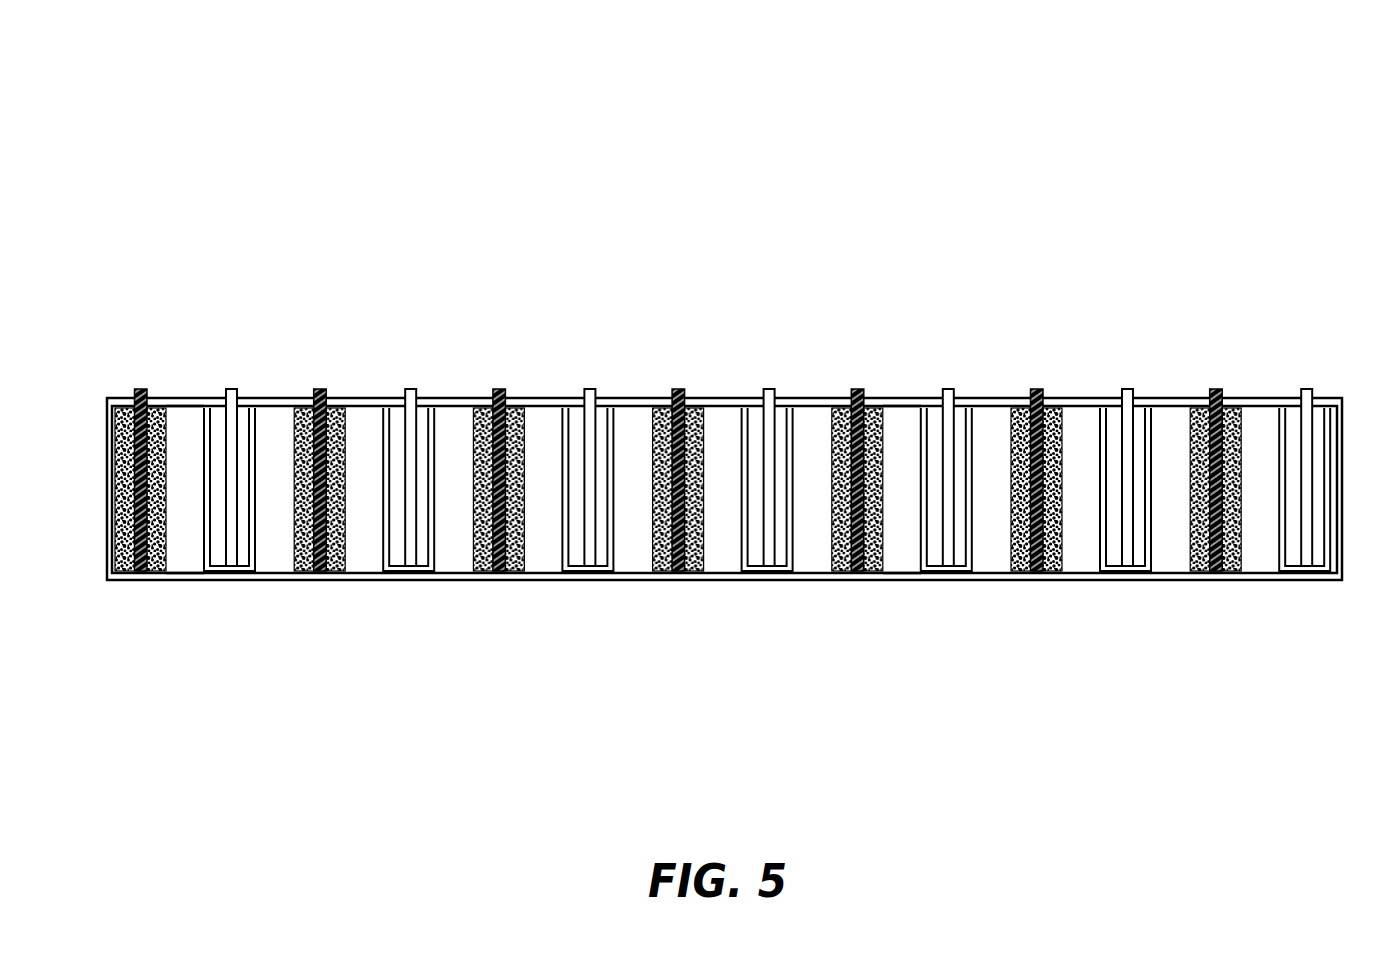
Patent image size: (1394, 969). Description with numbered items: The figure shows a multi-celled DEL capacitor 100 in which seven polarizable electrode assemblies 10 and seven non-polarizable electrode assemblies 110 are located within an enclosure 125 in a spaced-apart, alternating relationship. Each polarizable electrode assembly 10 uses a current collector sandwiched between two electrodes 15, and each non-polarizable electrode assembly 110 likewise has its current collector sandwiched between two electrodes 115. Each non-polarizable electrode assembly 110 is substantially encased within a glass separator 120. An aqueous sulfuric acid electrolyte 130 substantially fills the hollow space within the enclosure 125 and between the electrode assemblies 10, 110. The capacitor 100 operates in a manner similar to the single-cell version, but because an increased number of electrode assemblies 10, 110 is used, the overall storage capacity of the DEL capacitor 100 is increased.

The multi-celled DEL capacitor 100 is at (737, 366).
The polarizable electrode assembly 10 is at (128, 388).
The electrode 15 is at (127, 565).
The non-polarizable electrode assembly 110 is at (248, 388).
The electrode 115 is at (395, 565).
The glass separator 120 is at (562, 417).
The enclosure 125 is at (1160, 582).
The aqueous sulfuric acid electrolyte 130 is at (367, 422).